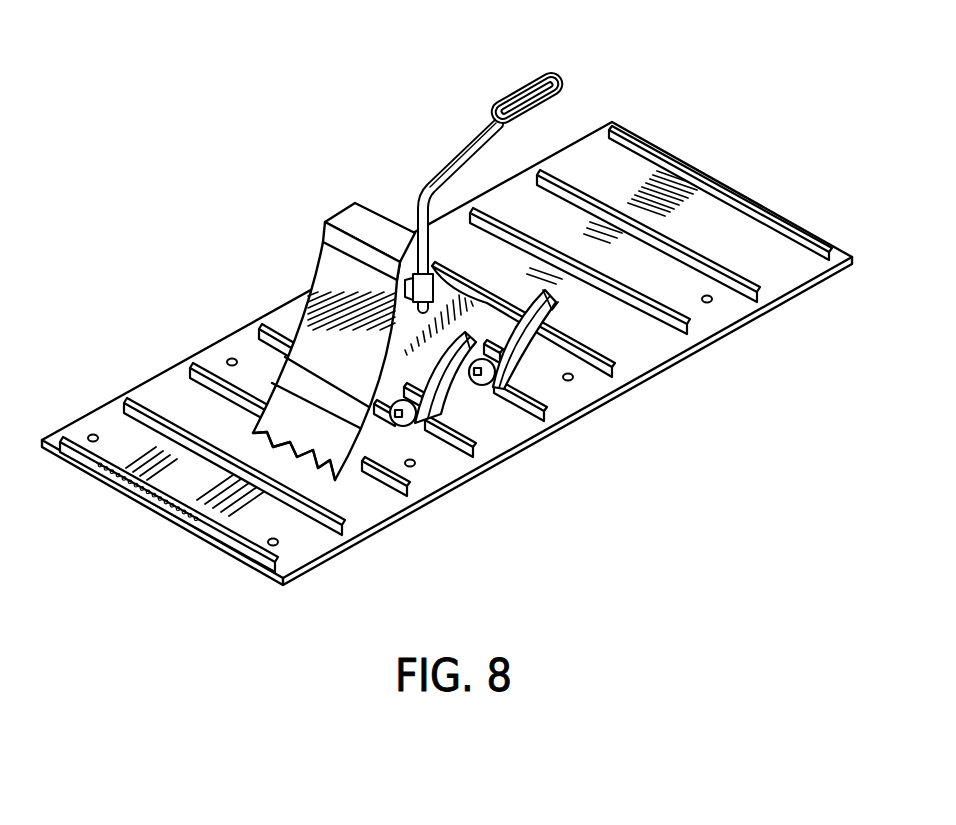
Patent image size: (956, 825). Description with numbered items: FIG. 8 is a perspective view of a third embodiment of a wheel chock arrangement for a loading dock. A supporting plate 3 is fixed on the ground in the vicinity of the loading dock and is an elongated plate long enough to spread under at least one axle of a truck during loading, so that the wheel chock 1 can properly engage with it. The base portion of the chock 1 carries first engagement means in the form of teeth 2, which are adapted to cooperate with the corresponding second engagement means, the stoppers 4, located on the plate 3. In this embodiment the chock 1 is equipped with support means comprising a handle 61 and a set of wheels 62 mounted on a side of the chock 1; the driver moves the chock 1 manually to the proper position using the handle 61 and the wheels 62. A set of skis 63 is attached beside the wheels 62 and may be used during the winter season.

The wheel chock 1 is at (321, 242).
The teeth 2 is at (350, 472).
The supporting plate 3 is at (742, 327).
The stoppers 4 is at (727, 188).
The handle 61 is at (514, 87).
The wheels 62 is at (490, 393).
The skis 63 is at (533, 340).